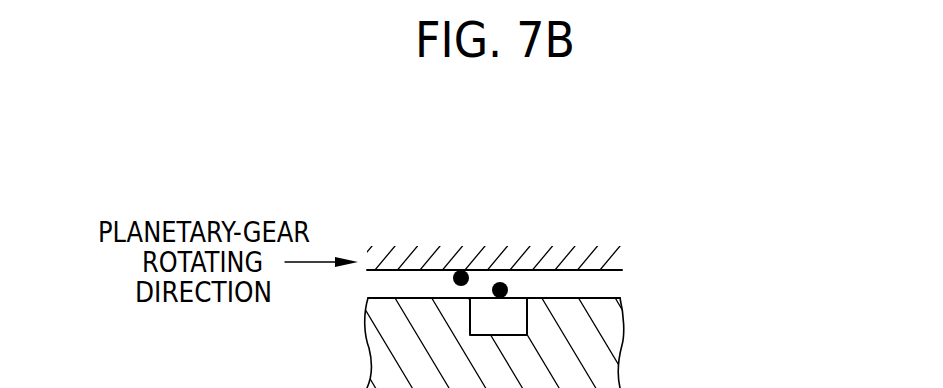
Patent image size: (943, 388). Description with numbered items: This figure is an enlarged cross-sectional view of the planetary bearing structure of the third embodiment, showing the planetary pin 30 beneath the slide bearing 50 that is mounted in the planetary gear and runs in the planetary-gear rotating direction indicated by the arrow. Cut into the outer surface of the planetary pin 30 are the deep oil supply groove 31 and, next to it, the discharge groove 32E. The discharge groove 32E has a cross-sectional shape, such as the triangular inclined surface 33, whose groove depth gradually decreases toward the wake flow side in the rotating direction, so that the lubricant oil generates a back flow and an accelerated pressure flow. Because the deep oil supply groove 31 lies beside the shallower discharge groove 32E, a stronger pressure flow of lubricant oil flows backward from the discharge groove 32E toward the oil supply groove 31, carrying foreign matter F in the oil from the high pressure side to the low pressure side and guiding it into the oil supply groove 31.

The planetary pin 30 is at (607, 352).
The oil supply groove 31 is at (478, 322).
The discharge groove 32E is at (534, 305).
The inclined surface 33 is at (528, 315).
The slide bearing 50 is at (603, 273).
The foreign matter F is at (460, 270).